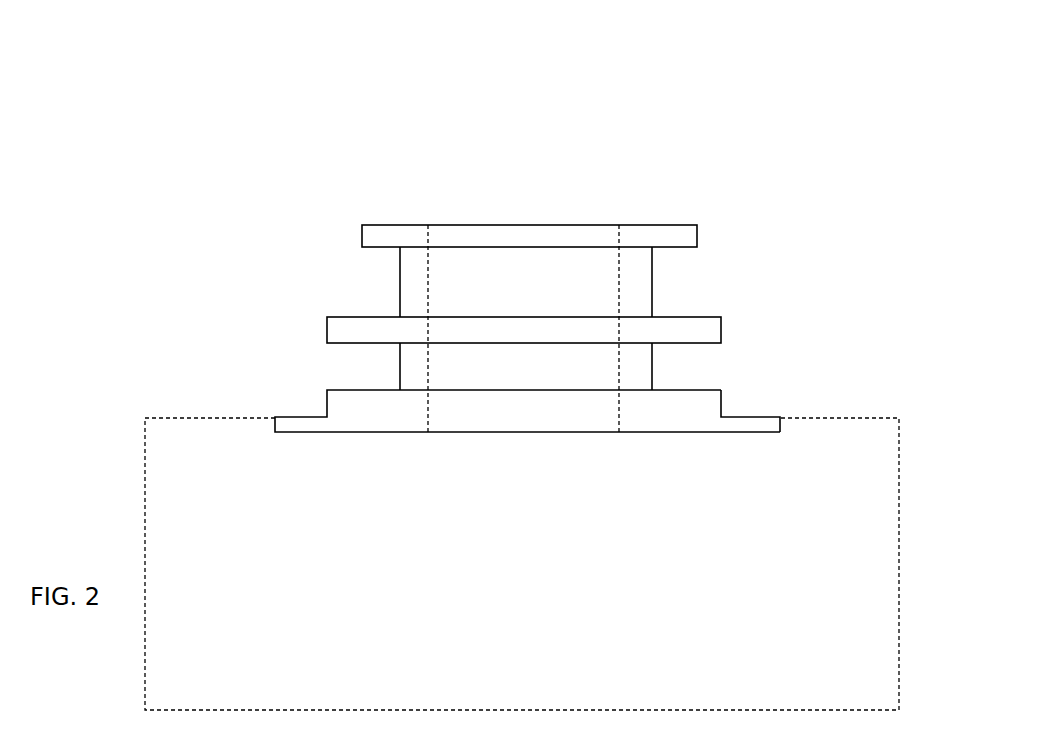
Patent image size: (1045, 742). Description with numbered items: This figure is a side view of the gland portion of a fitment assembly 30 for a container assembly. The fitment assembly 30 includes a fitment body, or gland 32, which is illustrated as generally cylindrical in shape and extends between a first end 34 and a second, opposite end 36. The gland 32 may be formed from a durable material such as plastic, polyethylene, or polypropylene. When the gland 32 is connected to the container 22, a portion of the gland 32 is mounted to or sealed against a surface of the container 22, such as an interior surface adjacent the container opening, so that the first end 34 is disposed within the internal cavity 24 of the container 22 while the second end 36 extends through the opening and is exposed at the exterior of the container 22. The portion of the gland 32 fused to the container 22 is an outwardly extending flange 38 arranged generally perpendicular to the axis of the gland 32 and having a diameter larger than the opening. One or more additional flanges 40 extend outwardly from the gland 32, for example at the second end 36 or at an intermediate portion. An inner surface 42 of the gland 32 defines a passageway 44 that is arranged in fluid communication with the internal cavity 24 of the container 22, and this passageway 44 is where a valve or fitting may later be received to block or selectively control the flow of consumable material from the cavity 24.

The container 22 is at (900, 482).
The internal cavity 24 is at (259, 648).
The fitment assembly 30 is at (156, 71).
The gland 32 is at (326, 272).
The first end 34 is at (362, 433).
The second end 36 is at (402, 225).
The outwardly extending flange 38 is at (742, 422).
The additional flanges 40 is at (702, 333).
The inner surface 42 is at (427, 278).
The passageway 44 is at (508, 365).